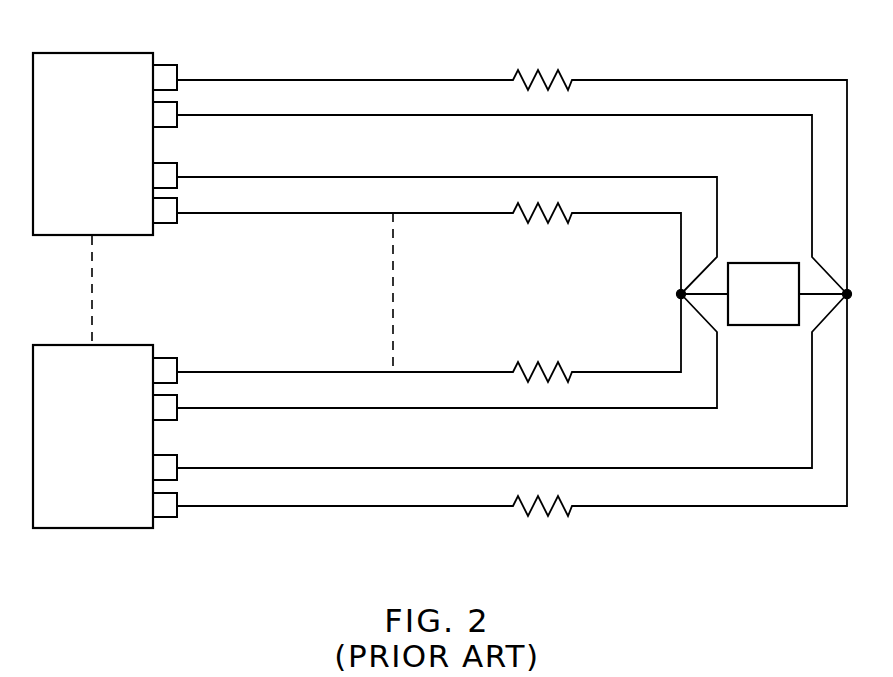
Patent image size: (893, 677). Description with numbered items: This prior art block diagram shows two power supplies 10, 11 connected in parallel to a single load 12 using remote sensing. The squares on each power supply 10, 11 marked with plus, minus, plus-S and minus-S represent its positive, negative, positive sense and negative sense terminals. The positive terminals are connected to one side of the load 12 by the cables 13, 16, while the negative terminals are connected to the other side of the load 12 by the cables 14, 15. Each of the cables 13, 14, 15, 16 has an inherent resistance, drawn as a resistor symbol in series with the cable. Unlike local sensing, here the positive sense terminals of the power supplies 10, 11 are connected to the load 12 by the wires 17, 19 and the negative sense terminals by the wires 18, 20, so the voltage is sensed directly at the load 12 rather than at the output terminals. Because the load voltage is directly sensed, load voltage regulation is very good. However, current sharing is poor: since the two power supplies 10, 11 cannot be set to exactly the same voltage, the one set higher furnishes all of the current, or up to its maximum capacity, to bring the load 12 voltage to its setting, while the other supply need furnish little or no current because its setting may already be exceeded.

The power supply 10 is at (128, 236).
The power supply 11 is at (128, 345).
The load 12 is at (765, 325).
The cable 13 is at (410, 80).
The cable 14 is at (417, 213).
The cable 15 is at (417, 506).
The cable 16 is at (412, 372).
The wire 17 is at (567, 115).
The wire 18 is at (632, 177).
The wire 19 is at (632, 468).
The wire 20 is at (565, 408).